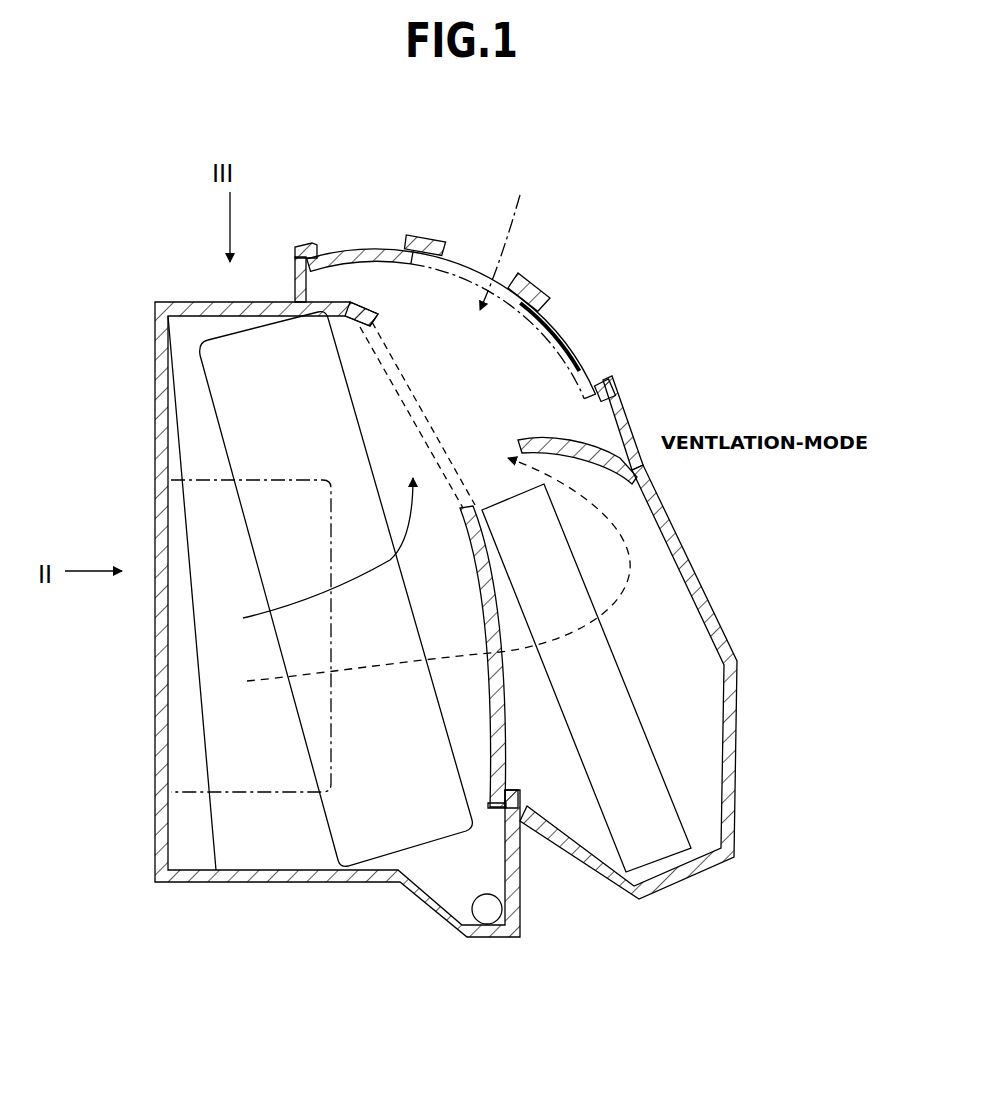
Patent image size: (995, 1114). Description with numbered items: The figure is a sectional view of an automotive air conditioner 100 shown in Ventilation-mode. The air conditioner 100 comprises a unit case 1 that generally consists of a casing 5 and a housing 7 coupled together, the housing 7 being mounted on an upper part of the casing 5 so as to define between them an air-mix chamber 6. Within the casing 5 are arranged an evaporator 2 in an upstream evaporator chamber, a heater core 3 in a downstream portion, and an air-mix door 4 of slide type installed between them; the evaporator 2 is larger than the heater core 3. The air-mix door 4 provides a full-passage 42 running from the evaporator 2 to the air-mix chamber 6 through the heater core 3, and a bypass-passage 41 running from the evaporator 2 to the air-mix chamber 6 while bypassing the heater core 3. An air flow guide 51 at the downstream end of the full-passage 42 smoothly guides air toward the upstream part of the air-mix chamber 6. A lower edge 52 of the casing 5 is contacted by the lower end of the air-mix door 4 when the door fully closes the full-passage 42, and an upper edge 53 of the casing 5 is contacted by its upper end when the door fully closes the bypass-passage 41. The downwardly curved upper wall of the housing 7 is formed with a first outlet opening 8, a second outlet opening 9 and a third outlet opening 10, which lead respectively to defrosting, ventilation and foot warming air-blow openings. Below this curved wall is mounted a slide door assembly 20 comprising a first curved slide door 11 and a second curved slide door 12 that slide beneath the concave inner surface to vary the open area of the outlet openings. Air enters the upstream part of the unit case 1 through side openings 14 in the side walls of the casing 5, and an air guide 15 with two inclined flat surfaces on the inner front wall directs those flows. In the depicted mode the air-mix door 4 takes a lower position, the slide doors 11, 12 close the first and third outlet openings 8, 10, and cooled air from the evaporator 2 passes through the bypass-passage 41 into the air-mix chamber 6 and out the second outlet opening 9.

The automotive air conditioner 100 is at (690, 171).
The unit case 1 is at (700, 333).
The evaporator 2 is at (333, 838).
The heater core 3 is at (645, 728).
The air-mix door 4 is at (507, 695).
The casing 5 is at (713, 600).
The air-mix chamber 6 is at (440, 376).
The housing 7 is at (626, 420).
The first outlet opening 8 is at (320, 250).
The second outlet opening 9 is at (445, 248).
The third outlet opening 10 is at (604, 378).
The first curved slide door 11 is at (377, 266).
The second curved slide door 12 is at (548, 332).
The side opening 14 is at (250, 780).
The air guide 15 is at (212, 820).
The slide door assembly 20 is at (512, 230).
The bypass-passage 41 is at (403, 412).
The full-passage 42 is at (480, 680).
The air flow guide 51 is at (570, 437).
The lower edge of the casing 52 is at (522, 800).
The upper edge of the casing 53 is at (382, 306).